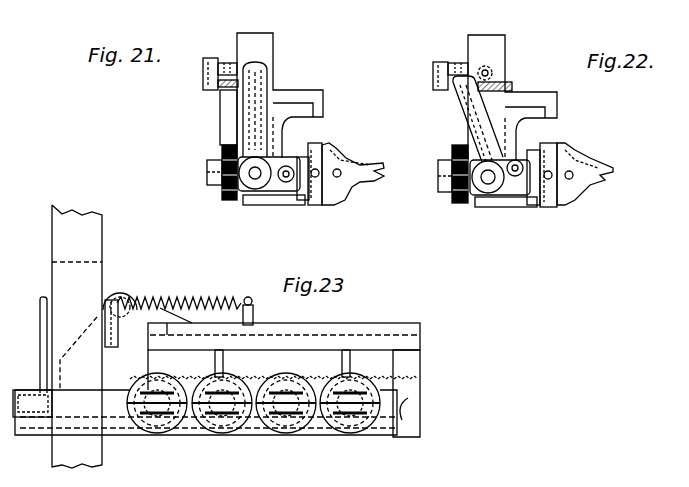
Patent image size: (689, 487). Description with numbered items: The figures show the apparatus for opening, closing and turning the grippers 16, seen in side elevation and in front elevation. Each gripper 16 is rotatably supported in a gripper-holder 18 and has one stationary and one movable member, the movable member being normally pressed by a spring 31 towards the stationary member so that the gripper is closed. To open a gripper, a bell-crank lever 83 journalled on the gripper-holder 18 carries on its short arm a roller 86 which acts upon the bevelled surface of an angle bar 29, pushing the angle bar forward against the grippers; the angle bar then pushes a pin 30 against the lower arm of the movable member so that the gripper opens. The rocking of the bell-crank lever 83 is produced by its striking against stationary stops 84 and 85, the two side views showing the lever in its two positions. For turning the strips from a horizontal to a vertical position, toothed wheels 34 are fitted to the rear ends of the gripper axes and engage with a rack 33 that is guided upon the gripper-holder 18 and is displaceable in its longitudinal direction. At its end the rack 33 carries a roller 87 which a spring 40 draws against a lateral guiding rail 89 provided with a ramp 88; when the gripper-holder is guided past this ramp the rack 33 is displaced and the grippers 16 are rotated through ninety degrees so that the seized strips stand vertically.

In FIG. 21, the gripper 16 is at (372, 166).
In FIG. 22, the gripper 16 is at (600, 176).
In FIG. 23, the gripper 16 is at (160, 432).
In FIG. 21, the gripper-holder 18 is at (287, 122).
In FIG. 22, the gripper-holder 18 is at (519, 123).
In FIG. 23, the gripper-holder 18 is at (400, 394).
In FIG. 21, the angle bar 29 is at (301, 200).
In FIG. 22, the angle bar 29 is at (500, 207).
In FIG. 21, the pin 30 is at (318, 205).
In FIG. 22, the pin 30 is at (535, 207).
In FIG. 22, the spring 31 is at (553, 150).
In FIG. 21, the rack 33 is at (325, 95).
In FIG. 22, the rack 33 is at (549, 96).
In FIG. 23, the rack 33 is at (358, 325).
In FIG. 21, the toothed wheel 34 is at (218, 191).
In FIG. 22, the toothed wheel 34 is at (448, 194).
In FIG. 23, the spring 40 is at (196, 302).
In FIG. 21, the bell-crank lever 83 is at (249, 105).
In FIG. 22, the bell-crank lever 83 is at (460, 110).
In FIG. 23, the bell-crank lever 83 is at (42, 304).
In FIG. 21, the stationary stop 84 is at (230, 63).
In FIG. 22, the stationary stop 85 is at (512, 84).
In FIG. 21, the roller 86 is at (283, 181).
In FIG. 22, the roller 86 is at (517, 162).
In FIG. 23, the roller 86 is at (25, 390).
In FIG. 21, the roller 87 is at (203, 76).
In FIG. 22, the roller 87 is at (436, 80).
In FIG. 23, the roller 87 is at (126, 291).
In FIG. 23, the ramp 88 is at (78, 353).
In FIG. 23, the lateral guiding rail 89 is at (95, 245).